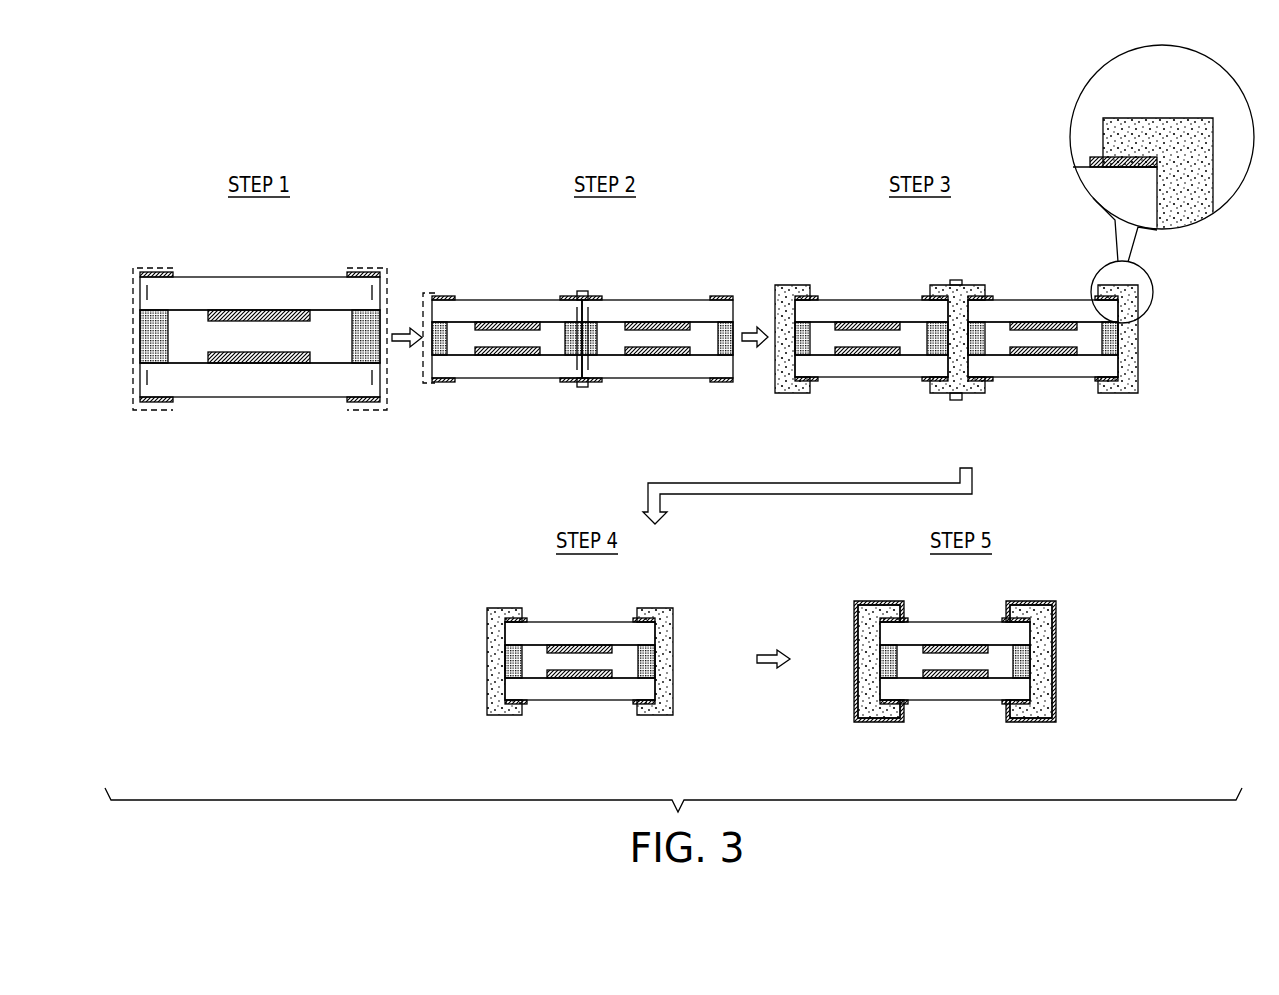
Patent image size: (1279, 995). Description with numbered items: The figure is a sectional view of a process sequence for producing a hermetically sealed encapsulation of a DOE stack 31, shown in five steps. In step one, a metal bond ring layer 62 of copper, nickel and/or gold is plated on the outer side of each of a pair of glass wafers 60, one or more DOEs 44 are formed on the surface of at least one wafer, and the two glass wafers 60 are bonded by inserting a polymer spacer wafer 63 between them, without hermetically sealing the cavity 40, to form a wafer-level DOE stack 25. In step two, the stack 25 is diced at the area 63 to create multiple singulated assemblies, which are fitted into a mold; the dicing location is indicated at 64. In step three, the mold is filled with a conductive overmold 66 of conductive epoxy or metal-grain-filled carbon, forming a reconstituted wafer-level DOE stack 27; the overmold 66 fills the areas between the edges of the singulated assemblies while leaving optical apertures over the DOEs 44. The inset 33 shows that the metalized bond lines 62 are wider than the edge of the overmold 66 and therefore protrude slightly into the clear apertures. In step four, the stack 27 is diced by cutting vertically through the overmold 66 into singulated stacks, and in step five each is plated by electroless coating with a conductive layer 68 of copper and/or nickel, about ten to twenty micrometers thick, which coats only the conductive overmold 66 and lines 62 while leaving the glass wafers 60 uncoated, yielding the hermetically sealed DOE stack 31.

The wafer-level DOE stack 25 is at (129, 237).
The reconstituted wafer-level DOE stack 27 is at (803, 239).
The hermetically sealed DOE stack 31 is at (842, 581).
The inset 33 is at (1078, 91).
The cavity 40 is at (327, 345).
The DOE 44 is at (305, 347).
The glass wafer 60 is at (213, 286).
The metal bond ring layer 62 is at (160, 272).
The polymer spacer wafer 63 is at (137, 337).
The dicing line 64 is at (586, 310).
The conductive overmold 66 is at (785, 393).
The conductive layer 68 is at (875, 604).